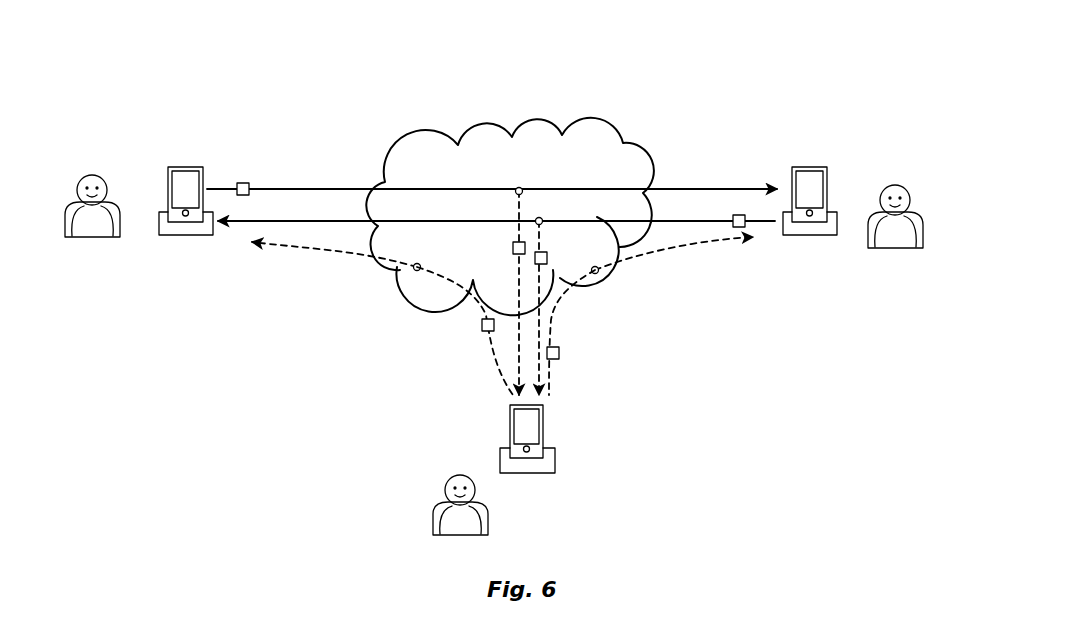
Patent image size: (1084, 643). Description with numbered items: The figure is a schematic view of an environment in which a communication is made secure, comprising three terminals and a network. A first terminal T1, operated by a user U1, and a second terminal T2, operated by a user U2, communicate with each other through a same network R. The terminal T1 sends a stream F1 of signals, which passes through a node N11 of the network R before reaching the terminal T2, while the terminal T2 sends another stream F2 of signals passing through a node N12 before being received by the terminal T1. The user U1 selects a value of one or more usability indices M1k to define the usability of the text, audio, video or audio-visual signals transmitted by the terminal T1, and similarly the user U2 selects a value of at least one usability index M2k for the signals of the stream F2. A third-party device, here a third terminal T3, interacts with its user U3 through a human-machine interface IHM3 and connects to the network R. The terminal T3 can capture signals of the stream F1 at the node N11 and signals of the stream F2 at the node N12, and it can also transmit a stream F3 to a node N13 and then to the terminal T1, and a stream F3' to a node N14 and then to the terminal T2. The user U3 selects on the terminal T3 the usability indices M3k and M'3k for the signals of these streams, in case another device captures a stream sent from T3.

The user U1 is at (92, 135).
The terminal T1 is at (180, 152).
The stream of signals F1 is at (230, 187).
The usability index M1k is at (248, 183).
The stream of signals F2 is at (760, 225).
The usability index M2k is at (738, 215).
The network R is at (508, 108).
The network node N11 is at (519, 187).
The network node N12 is at (539, 217).
The network node N13 is at (414, 268).
The network node N14 is at (598, 272).
The stream of signals F3 is at (461, 342).
The stream of signals F3' is at (592, 352).
The usability index M3k is at (482, 325).
The usability index M'3k is at (597, 367).
The terminal T2 is at (823, 145).
The user U2 is at (915, 168).
The third terminal T3 is at (573, 460).
The human-machine interface IHM3 is at (527, 418).
The user U3 is at (402, 510).